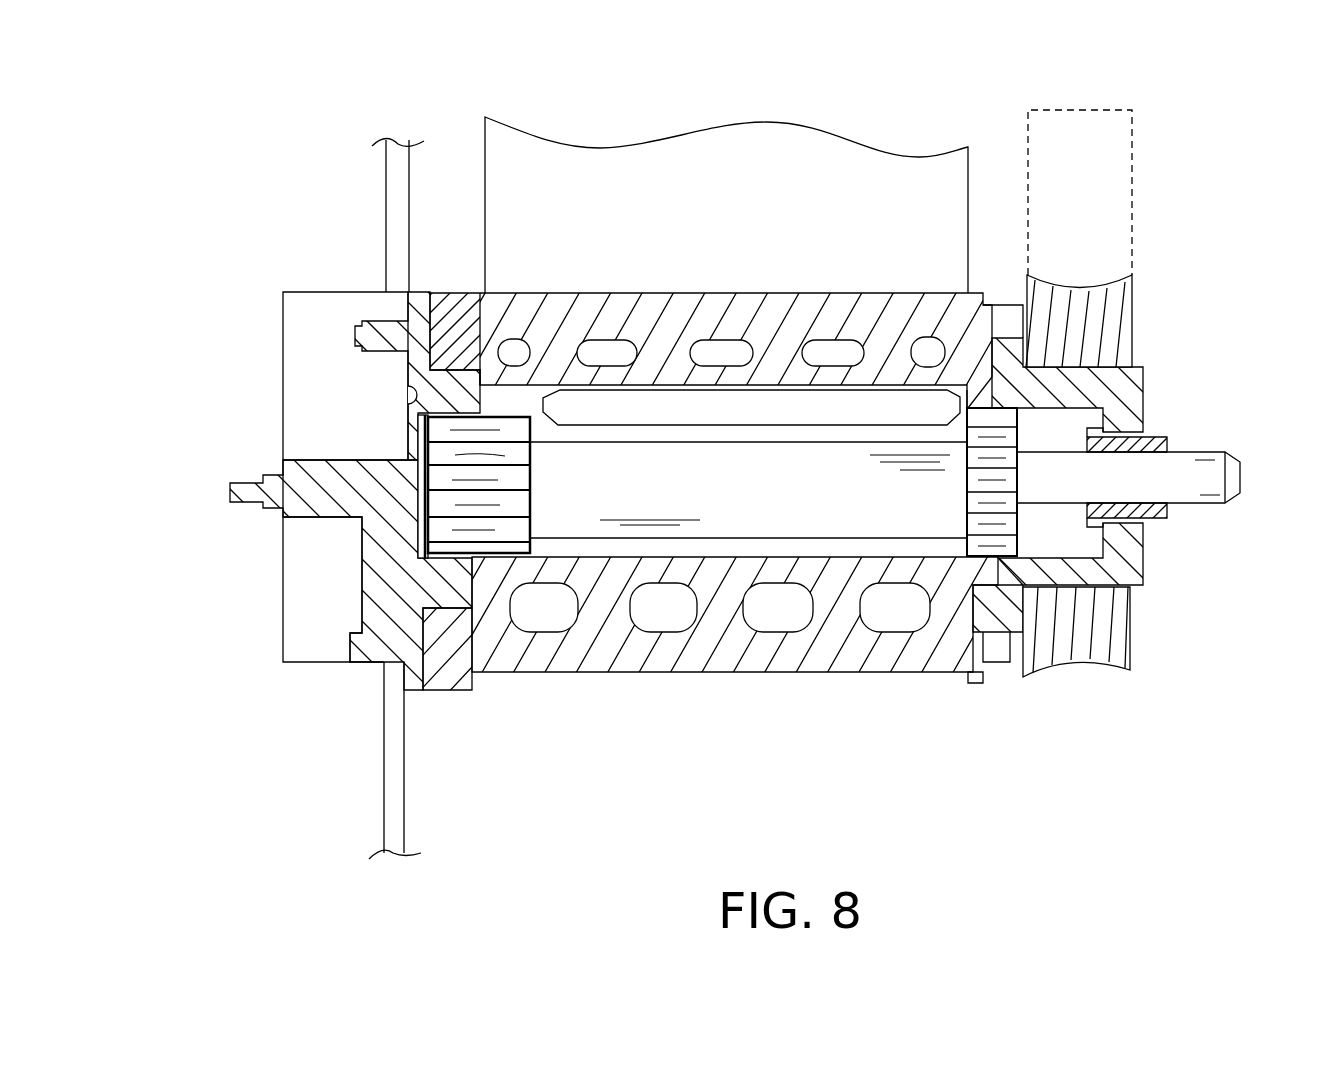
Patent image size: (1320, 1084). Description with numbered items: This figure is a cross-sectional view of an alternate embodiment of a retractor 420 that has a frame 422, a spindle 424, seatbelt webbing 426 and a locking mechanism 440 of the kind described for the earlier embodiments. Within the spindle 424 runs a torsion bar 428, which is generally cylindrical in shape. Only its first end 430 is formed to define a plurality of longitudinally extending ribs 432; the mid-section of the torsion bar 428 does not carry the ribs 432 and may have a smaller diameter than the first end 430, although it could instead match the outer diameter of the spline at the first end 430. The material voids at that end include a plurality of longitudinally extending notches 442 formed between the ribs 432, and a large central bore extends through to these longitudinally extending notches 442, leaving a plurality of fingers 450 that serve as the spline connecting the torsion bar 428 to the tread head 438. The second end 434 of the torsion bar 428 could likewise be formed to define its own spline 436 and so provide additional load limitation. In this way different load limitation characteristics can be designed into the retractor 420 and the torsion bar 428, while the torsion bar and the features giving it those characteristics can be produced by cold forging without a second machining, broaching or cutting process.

The retractor 420 is at (357, 142).
The frame 422 is at (397, 230).
The spindle 424 is at (648, 300).
The seatbelt webbing 426 is at (778, 216).
The torsion bar 428 is at (742, 510).
The first end 430 is at (420, 483).
The longitudinally extending ribs 432 is at (471, 554).
The second end 434 is at (950, 483).
The spline 436 is at (1008, 508).
The tread head 438 is at (375, 650).
The locking mechanism 440 is at (295, 393).
The longitudinally extending notches 442 is at (440, 453).
The fingers 450 is at (1138, 285).